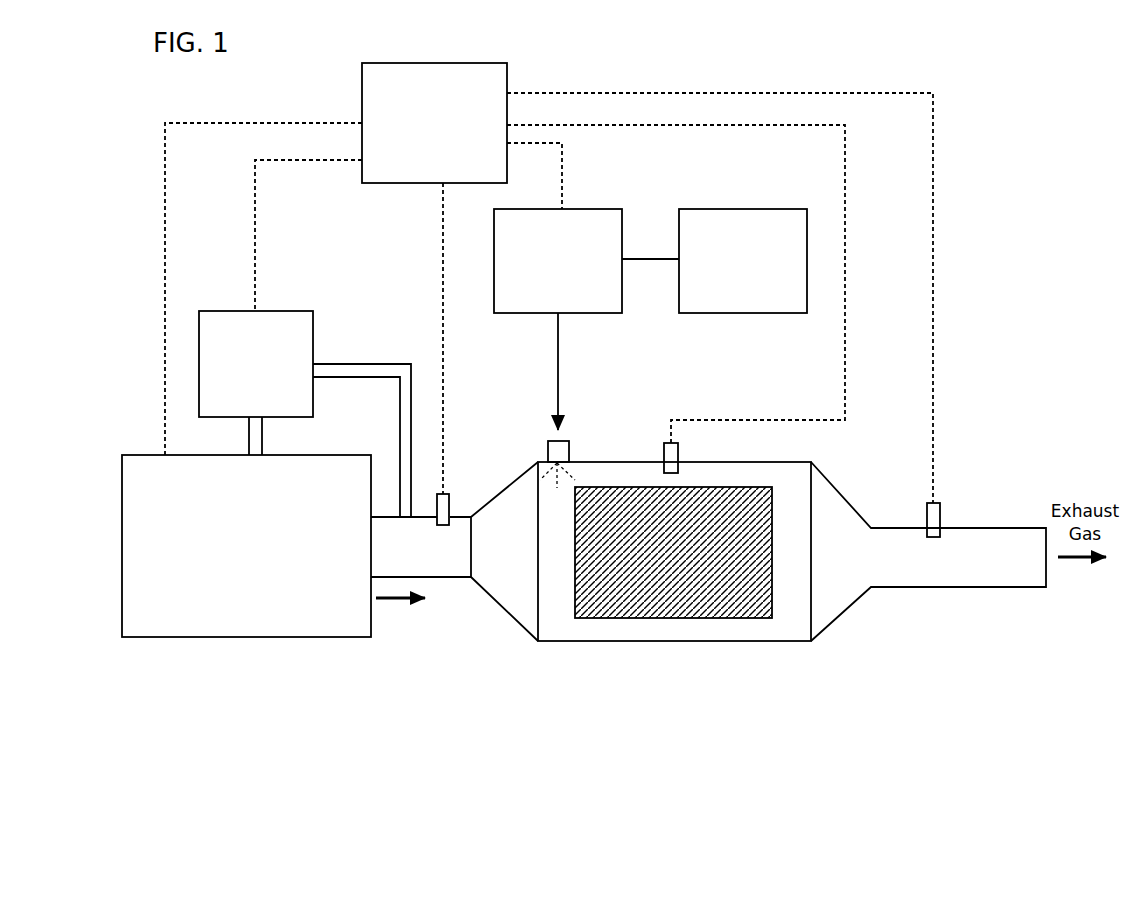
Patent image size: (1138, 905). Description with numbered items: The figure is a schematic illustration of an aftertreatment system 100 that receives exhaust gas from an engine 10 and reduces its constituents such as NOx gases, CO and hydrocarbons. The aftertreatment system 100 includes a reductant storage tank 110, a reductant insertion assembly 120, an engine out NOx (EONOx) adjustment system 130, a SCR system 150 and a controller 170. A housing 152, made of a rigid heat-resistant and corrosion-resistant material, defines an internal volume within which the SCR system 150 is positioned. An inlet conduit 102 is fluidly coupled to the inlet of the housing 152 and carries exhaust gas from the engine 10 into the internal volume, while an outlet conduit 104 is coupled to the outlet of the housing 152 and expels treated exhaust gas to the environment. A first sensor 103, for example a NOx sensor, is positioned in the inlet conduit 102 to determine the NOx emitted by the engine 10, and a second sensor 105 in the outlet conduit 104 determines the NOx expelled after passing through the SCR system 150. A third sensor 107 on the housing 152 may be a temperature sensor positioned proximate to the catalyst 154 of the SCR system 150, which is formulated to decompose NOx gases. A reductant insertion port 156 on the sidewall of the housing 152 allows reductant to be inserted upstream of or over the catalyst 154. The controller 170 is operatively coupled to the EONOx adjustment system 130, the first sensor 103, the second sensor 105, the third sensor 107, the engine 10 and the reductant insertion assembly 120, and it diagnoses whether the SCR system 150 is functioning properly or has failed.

The aftertreatment system 100 is at (936, 57).
The engine 10 is at (273, 546).
The controller 170 is at (549, 283).
The reductant insertion assembly 120 is at (586, 319).
The reductant storage tank 110 is at (743, 261).
The engine out NOx (EONOx) adjustment system 130 is at (305, 414).
The inlet conduit 102 is at (458, 563).
The first sensor 103 is at (475, 490).
The SCR system 150 is at (792, 588).
The housing 152 is at (717, 643).
The catalyst 154 is at (745, 598).
The reductant insertion port 156 is at (561, 452).
The third sensor 107 is at (677, 457).
The second sensor 105 is at (938, 517).
The outlet conduit 104 is at (1020, 580).